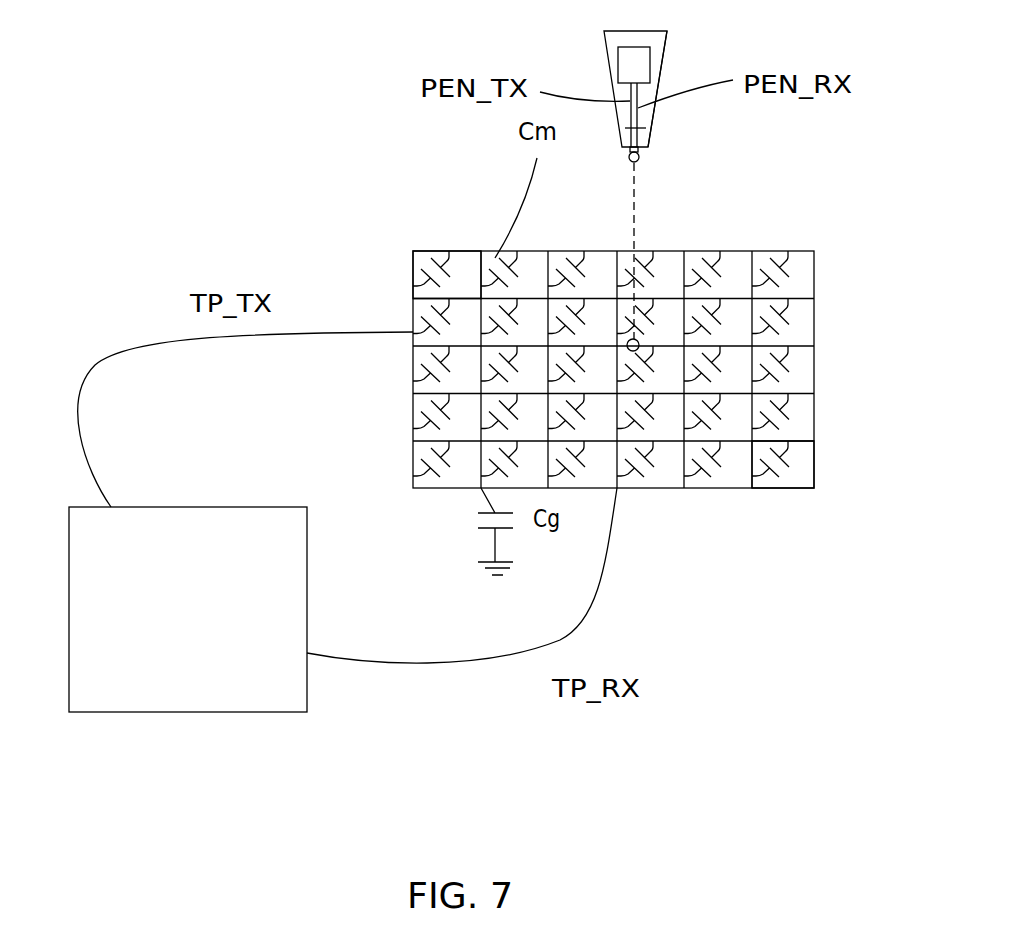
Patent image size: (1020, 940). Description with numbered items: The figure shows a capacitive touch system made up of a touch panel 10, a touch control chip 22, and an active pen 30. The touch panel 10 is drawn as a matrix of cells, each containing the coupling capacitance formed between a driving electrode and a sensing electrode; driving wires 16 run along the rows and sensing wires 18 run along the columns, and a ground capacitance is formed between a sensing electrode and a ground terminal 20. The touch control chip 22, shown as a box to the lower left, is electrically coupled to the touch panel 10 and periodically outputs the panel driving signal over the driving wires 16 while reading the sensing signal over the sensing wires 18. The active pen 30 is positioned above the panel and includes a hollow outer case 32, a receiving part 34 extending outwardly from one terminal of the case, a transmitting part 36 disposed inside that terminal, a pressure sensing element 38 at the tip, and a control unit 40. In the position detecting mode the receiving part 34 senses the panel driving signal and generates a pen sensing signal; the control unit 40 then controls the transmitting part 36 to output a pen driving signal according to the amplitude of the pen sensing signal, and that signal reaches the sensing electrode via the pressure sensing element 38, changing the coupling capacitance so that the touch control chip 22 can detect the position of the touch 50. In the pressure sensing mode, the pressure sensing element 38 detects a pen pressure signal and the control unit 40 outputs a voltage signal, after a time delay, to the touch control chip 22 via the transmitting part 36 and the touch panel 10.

The touch panel 10 is at (713, 250).
The driving wires 16 is at (463, 298).
The sensing wires 18 is at (753, 480).
The ground terminal 20 is at (502, 577).
The touch control chip 22 is at (161, 507).
The active pen 30 is at (647, 176).
The outer case 32 is at (660, 69).
The receiving part 34 is at (638, 148).
The transmitting part 36 is at (640, 138).
The pressure sensing element 38 is at (630, 160).
The control unit 40 is at (622, 53).
The touch 50 is at (637, 338).